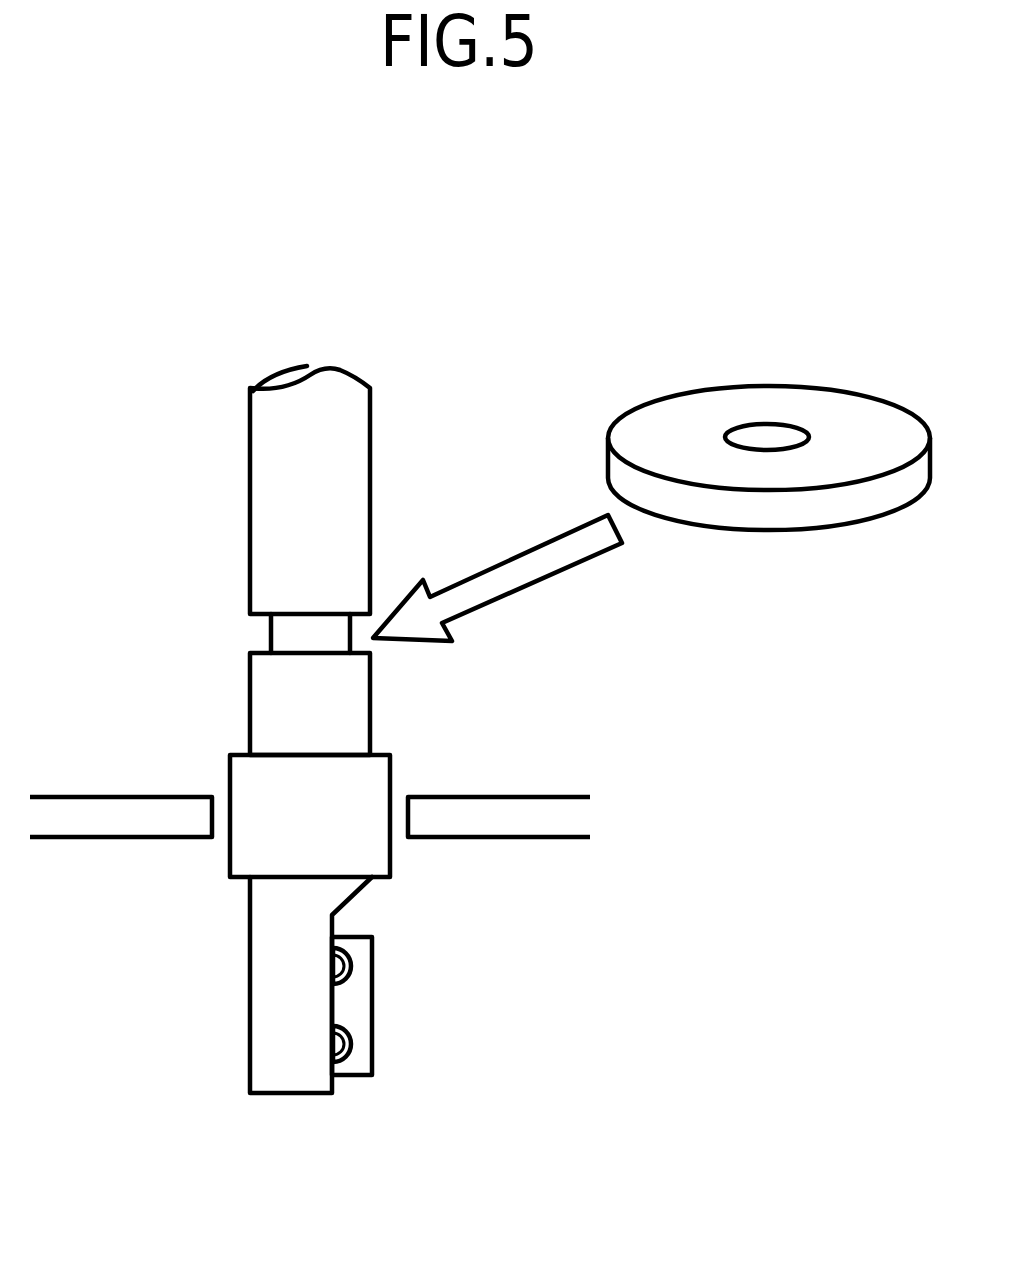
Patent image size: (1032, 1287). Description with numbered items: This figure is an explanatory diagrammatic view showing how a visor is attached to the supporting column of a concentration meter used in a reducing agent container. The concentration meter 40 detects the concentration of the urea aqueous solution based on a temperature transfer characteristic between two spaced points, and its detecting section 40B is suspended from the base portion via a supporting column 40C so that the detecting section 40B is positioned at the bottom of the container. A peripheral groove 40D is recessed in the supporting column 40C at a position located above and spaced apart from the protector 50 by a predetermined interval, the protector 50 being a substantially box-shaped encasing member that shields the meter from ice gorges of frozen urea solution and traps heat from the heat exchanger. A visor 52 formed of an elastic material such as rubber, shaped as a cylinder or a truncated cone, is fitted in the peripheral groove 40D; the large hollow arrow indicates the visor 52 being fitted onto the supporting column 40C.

The concentration meter 40 is at (298, 703).
The detecting section 40B is at (373, 992).
The supporting column 40C is at (265, 527).
The peripheral groove 40D is at (268, 636).
The protector 50 is at (478, 798).
The visor 52 is at (830, 388).